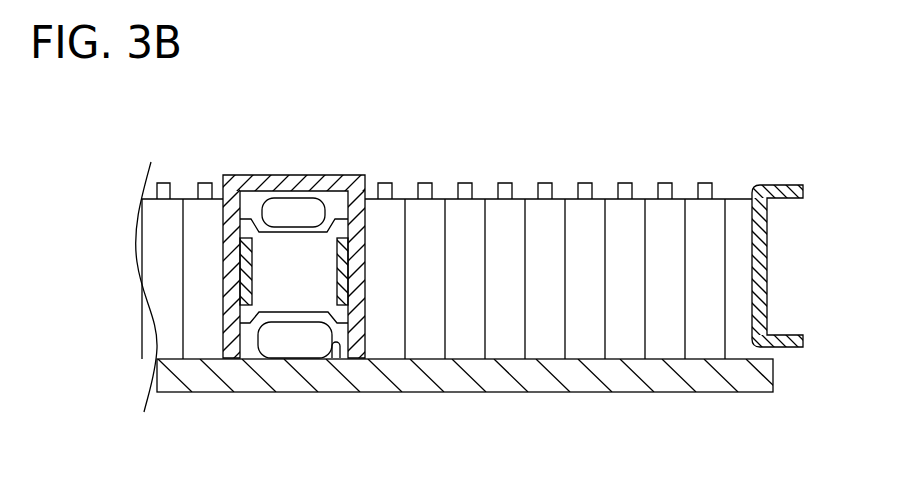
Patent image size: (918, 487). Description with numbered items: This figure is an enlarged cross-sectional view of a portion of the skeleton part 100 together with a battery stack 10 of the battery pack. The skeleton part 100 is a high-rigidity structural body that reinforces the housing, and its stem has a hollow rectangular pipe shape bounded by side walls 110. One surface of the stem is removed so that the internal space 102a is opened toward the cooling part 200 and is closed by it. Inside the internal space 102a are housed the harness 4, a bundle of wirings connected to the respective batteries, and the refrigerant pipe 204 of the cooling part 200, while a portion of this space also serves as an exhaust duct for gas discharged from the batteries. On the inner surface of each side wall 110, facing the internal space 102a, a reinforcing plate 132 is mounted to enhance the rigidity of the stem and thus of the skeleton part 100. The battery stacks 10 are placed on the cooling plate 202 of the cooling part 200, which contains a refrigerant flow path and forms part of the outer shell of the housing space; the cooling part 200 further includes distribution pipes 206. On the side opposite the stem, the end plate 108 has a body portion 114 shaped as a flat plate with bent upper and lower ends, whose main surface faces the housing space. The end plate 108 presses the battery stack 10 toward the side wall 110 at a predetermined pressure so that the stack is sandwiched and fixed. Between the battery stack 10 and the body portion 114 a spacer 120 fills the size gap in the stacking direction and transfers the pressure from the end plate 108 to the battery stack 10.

The battery stack 10 is at (180, 198).
The harness 4 is at (333, 185).
The skeleton part 100 is at (315, 271).
The internal space 102a is at (248, 203).
The side wall 110 is at (223, 248).
The reinforcing plate 132 is at (337, 268).
The refrigerant pipe 204 is at (247, 342).
The distribution pipe 206 is at (339, 344).
The spacer 120 is at (786, 224).
The end plate 108 is at (782, 185).
The body portion 114 is at (767, 283).
The cooling part 200 is at (506, 409).
The cooling plate 202 is at (464, 376).